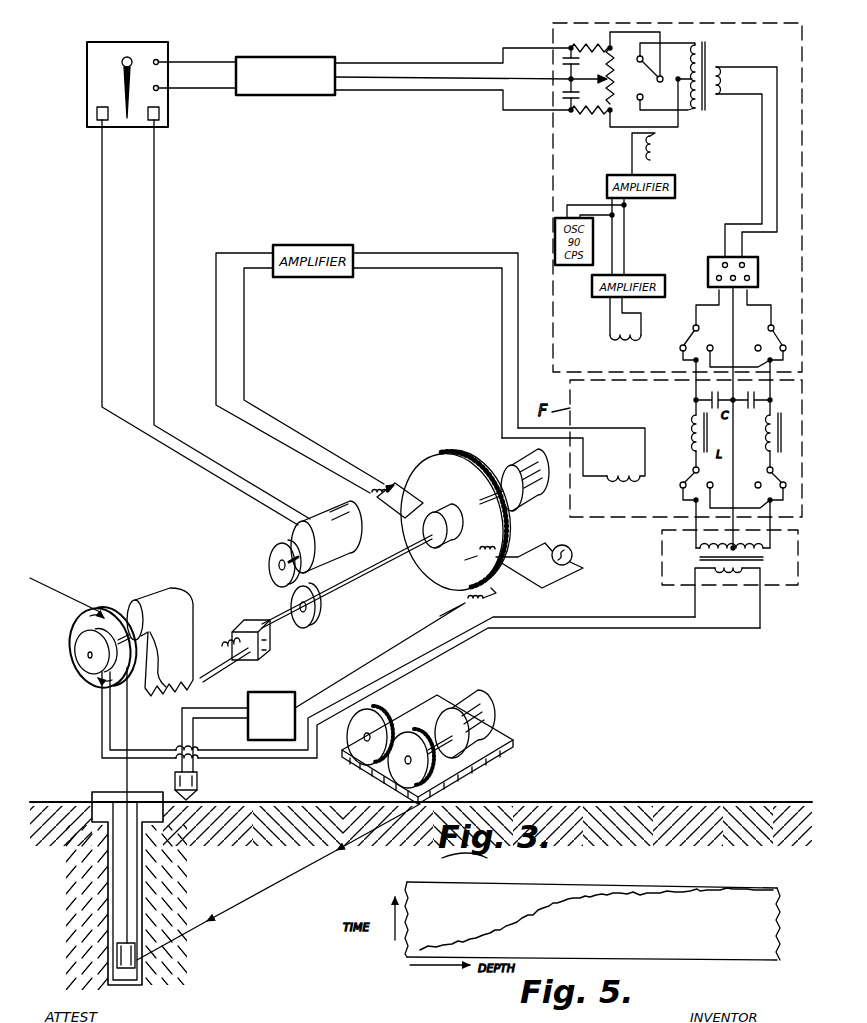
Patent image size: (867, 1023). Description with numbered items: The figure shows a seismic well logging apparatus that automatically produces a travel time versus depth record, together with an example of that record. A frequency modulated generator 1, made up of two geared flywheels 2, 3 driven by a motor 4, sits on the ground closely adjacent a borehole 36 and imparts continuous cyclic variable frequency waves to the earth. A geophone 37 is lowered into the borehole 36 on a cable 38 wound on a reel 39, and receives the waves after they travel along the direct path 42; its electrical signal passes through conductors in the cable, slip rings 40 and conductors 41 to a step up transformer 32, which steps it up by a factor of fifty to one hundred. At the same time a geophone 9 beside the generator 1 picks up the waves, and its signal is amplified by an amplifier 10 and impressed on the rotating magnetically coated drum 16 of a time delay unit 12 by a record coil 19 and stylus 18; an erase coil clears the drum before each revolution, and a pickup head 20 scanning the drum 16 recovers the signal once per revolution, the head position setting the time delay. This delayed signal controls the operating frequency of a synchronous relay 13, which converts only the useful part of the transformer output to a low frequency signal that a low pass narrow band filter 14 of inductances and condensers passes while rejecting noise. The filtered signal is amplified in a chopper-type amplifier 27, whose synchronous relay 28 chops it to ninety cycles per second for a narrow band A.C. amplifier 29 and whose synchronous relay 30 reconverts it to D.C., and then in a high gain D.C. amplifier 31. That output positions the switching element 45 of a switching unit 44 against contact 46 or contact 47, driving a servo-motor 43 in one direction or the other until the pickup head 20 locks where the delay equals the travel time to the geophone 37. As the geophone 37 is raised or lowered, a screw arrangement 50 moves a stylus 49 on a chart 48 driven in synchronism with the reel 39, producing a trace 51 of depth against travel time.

In FIG. 3, the frequency modulated generator 1 is at (545, 739).
In FIG. 3, the flywheel 2 is at (370, 718).
In FIG. 3, the flywheel 3 is at (400, 735).
In FIG. 3, the motor 4 is at (480, 700).
In FIG. 3, the geophone 9 is at (198, 780).
In FIG. 3, the amplifier 10 is at (262, 692).
In FIG. 3, the time delay unit 12 is at (548, 527).
In FIG. 3, the synchronous relay 13 is at (690, 471).
In FIG. 3, the low pass narrow band filter 14 is at (694, 402).
In FIG. 3, the magnetically coated drum 16 is at (447, 456).
In FIG. 3, the stylus 18 is at (496, 594).
In FIG. 3, the record coil 19 is at (467, 598).
In FIG. 3, the pickup head 20 is at (381, 486).
In FIG. 3, the chopper-type amplifier 27 is at (553, 168).
In FIG. 3, the synchronous relay 28 is at (690, 331).
In FIG. 3, the narrow band A.C. amplifier 29 is at (708, 272).
In FIG. 3, the synchronous relay 30 is at (660, 90).
In FIG. 3, the high gain D.C. amplifier 31 is at (290, 98).
In FIG. 3, the step up transformer 32 is at (662, 553).
In FIG. 3, the borehole 36 is at (140, 872).
In FIG. 3, the geophone 37 is at (115, 955).
In FIG. 3, the cable 38 is at (126, 855).
In FIG. 3, the reel 39 is at (72, 628).
In FIG. 3, the slip rings 40 is at (76, 650).
In FIG. 3, the conductors 41 is at (612, 618).
In FIG. 3, the direct path 42 is at (248, 892).
In FIG. 3, the servo-motor 43 is at (338, 520).
In FIG. 3, the switching unit 44 is at (122, 48).
In FIG. 3, the switching element 45 is at (122, 66).
In FIG. 3, the contact 46 is at (97, 114).
In FIG. 3, the contact 47 is at (160, 114).
In FIG. 3, the chart 48 is at (188, 630).
In FIG. 5, the chart 48 is at (684, 950).
In FIG. 3, the stylus 49 is at (216, 672).
In FIG. 3, the screw arrangement 50 is at (271, 645).
In FIG. 5, the trace 51 is at (665, 893).